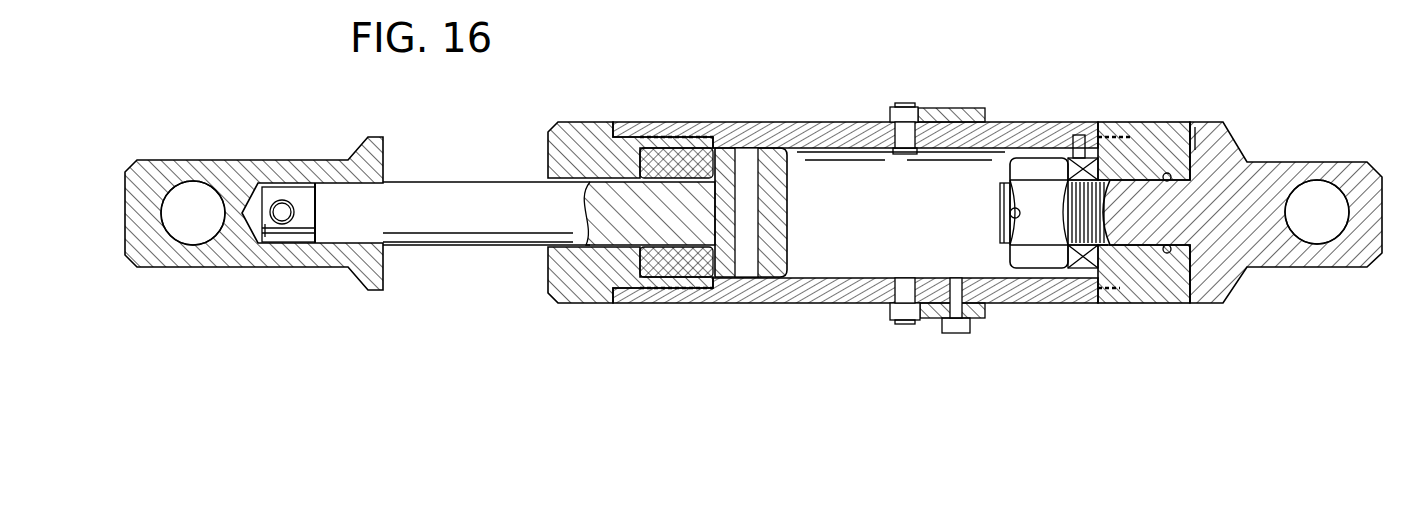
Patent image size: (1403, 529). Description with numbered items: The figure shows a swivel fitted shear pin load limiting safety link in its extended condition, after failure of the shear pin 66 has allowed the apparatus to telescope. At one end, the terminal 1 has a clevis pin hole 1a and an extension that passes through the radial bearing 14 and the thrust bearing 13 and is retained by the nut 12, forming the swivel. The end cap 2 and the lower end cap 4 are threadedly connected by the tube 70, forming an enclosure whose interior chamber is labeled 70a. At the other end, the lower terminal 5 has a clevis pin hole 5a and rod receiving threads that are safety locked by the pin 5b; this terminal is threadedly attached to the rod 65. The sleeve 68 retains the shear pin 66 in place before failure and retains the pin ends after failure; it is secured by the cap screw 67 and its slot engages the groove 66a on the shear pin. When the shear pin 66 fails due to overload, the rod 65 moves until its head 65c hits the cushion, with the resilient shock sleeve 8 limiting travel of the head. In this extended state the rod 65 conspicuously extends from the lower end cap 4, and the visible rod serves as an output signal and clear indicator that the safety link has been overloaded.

The terminal 1 is at (1370, 162).
The clevis pin hole 1a is at (1313, 183).
The end cap 2 is at (1158, 122).
The lower end cap 4 is at (588, 305).
The lower terminal 5 is at (362, 282).
The clevis pin hole 5a is at (203, 233).
The pin 5b is at (282, 207).
The resilient shock sleeve 8 is at (683, 290).
The nut 12 is at (1043, 257).
The thrust bearing 13 is at (1080, 270).
The radial bearing 14 is at (1180, 250).
The rod 65 is at (505, 218).
The head 65c is at (788, 232).
The shear pin 66 is at (748, 247).
The groove 66a is at (900, 313).
The cap screw 67 is at (965, 333).
The sleeve 68 is at (940, 110).
The tube 70 is at (793, 122).
The cylinder chamber 70a is at (962, 225).